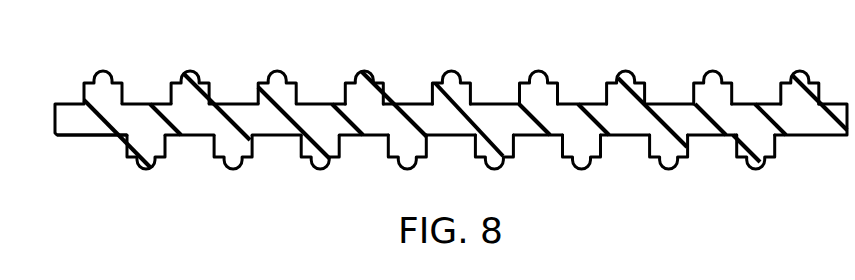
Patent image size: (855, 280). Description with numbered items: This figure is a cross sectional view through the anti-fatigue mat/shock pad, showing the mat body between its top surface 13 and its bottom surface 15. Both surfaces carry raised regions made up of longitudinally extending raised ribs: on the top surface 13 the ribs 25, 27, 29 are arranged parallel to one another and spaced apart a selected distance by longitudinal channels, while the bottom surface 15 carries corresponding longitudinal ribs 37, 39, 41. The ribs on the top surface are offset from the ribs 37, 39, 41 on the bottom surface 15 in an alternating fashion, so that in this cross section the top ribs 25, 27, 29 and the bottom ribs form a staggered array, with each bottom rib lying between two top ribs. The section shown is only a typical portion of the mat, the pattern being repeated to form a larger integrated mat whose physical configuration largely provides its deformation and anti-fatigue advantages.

The top surface 13 is at (70, 102).
The bottom surface 15 is at (92, 137).
The raised rib 25 is at (100, 72).
The raised rib 27 is at (185, 73).
The raised rib 29 is at (273, 73).
The longitudinal rib 37 is at (143, 167).
The longitudinal rib 39 is at (232, 168).
The longitudinal rib 41 is at (318, 168).